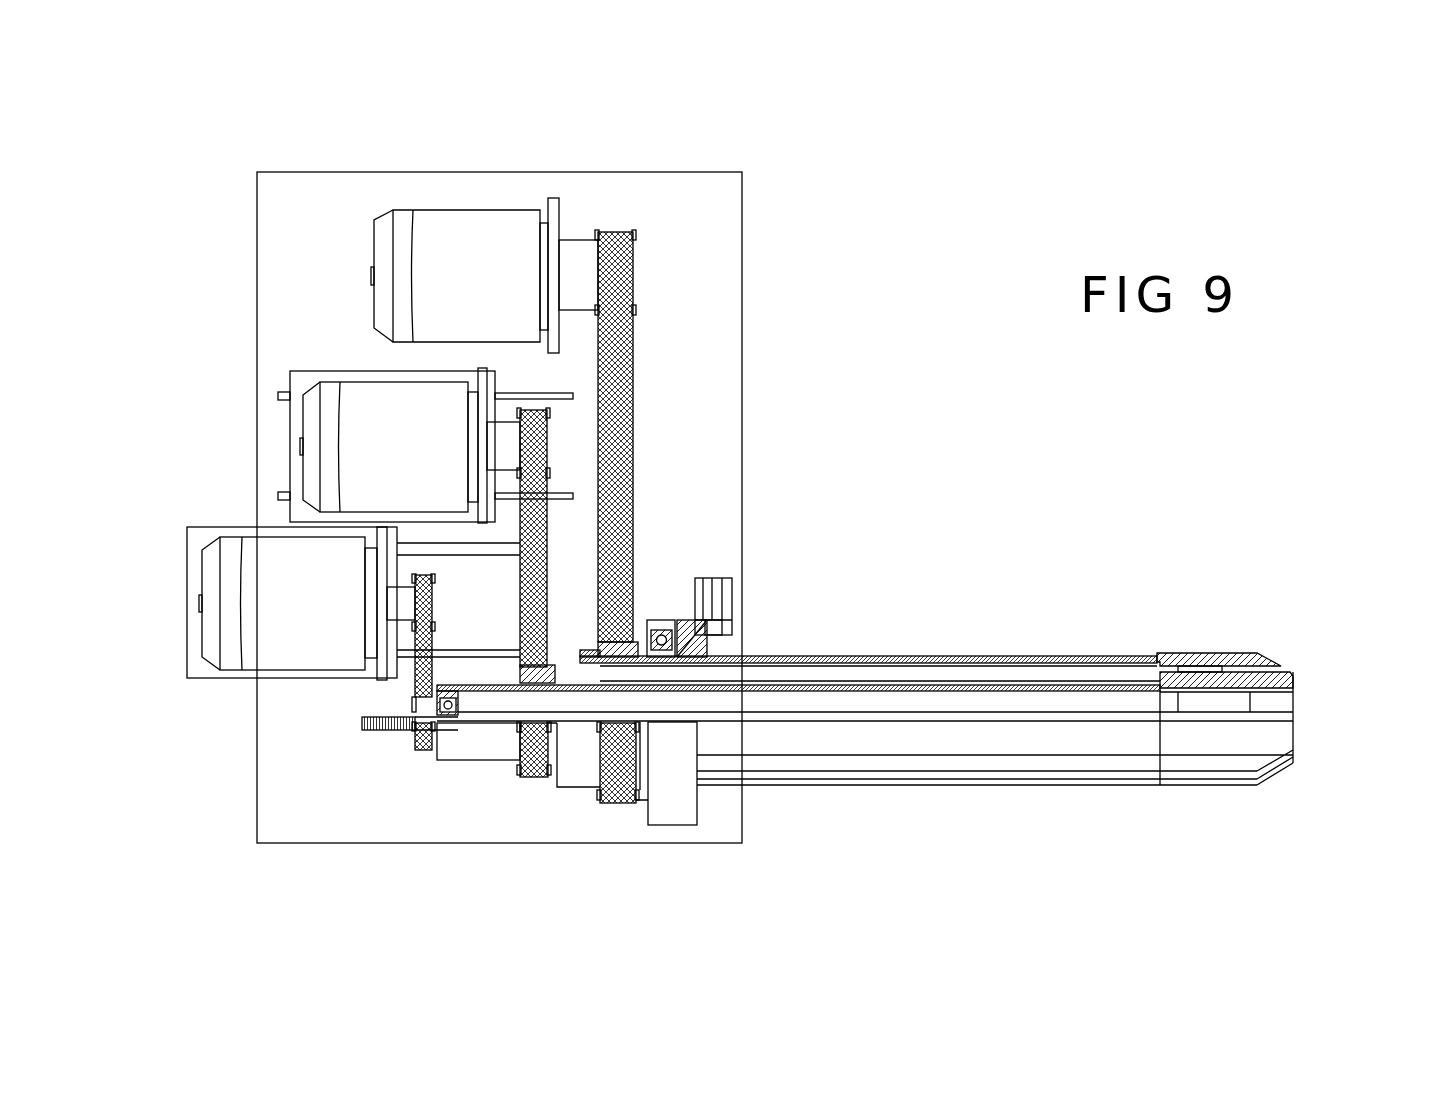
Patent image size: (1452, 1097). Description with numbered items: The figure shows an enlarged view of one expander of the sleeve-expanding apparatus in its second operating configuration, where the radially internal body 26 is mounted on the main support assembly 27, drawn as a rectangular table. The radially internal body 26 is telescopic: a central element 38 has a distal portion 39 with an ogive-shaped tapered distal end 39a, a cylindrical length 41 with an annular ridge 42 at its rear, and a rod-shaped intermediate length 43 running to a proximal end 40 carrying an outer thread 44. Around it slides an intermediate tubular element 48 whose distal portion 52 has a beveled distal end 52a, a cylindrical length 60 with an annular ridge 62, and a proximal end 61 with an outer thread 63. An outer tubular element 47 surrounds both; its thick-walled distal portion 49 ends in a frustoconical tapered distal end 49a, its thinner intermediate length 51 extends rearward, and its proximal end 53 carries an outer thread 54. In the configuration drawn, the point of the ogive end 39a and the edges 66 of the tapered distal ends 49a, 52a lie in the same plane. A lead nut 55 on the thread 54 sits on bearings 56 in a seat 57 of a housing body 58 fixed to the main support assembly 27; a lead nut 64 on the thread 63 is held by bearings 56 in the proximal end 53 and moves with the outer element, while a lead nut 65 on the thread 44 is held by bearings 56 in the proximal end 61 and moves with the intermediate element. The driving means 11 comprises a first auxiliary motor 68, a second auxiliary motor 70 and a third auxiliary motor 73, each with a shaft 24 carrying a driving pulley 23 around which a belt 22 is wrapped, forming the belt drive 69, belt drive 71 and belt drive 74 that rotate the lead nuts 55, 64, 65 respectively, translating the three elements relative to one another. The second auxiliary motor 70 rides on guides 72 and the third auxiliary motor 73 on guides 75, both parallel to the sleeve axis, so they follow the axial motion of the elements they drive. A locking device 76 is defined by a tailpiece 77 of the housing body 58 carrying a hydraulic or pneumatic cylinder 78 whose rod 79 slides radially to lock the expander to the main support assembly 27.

The driving means 11 is at (690, 365).
The belt 22 is at (636, 330).
The driving pulley 23 is at (640, 243).
The shaft 24 is at (580, 260).
The radially internal body 26 is at (1075, 644).
The main support assembly 27 is at (725, 222).
The central element 38 is at (1135, 708).
The distal portion 39 is at (1292, 703).
The tapered distal end 39a is at (1300, 720).
The proximal end 40 is at (385, 748).
The cylindrical length 41 is at (1210, 700).
The annular ridge 42 is at (1170, 708).
The intermediate length 43 is at (1030, 712).
The outer thread 44 is at (383, 745).
The outer tubular element 47 is at (1115, 648).
The intermediate tubular element 48 is at (1010, 645).
The distal portion 49 is at (1253, 792).
The tapered distal end 49a is at (1290, 660).
The intermediate length 51 is at (960, 675).
The distal portion 52 is at (1240, 670).
The distal end 52a is at (1296, 690).
The proximal end 53 is at (584, 806).
The outer thread 54 is at (583, 650).
The lead nut 55 is at (584, 622).
The bearings 56 is at (660, 622).
The seat 57 is at (686, 620).
The housing body 58 is at (700, 645).
The cylindrical length 60 is at (1218, 660).
The proximal end 61 is at (459, 771).
The annular ridge 62 is at (1180, 668).
The outer thread 63 is at (470, 680).
The lead nut 64 is at (532, 770).
The lead nut 65 is at (420, 753).
The edges 66 is at (1295, 680).
The first auxiliary motor 68 is at (447, 238).
The belt drive 69 is at (668, 288).
The second auxiliary motor 70 is at (410, 400).
The belt drive 71 is at (562, 546).
The guides 72 is at (280, 492).
The third auxiliary motor 73 is at (258, 572).
The belt drive 74 is at (345, 752).
The guides 75 is at (450, 552).
The locking device 76 is at (752, 590).
The tailpiece 77 is at (715, 625).
The cylinder 78 is at (707, 582).
The rod 79 is at (720, 641).